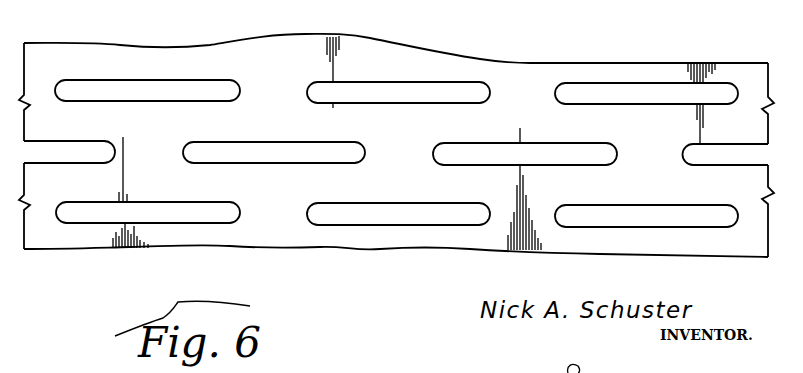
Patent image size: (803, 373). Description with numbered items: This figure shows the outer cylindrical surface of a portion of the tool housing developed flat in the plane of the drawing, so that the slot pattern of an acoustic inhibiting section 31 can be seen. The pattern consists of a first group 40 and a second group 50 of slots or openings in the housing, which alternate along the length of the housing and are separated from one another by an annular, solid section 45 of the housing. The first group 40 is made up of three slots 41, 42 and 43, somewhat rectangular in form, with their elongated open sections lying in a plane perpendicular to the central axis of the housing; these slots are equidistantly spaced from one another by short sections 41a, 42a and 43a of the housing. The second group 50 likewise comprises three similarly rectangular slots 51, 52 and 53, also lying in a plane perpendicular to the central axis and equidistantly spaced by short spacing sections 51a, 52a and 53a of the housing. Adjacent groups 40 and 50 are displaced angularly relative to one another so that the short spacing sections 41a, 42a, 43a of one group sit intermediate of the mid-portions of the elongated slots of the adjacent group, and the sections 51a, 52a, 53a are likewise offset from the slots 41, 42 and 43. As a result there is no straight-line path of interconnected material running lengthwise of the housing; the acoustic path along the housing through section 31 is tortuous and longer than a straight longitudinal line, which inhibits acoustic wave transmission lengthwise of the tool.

The first group of slots 40 is at (394, 80).
The slot 41 is at (138, 80).
The slot 42 is at (343, 92).
The slot 43 is at (636, 86).
The short section of the housing 41a is at (268, 88).
The short section of the housing 42a is at (506, 90).
The short section of the housing 43a is at (52, 41).
The acoustic inhibiting section 31 is at (538, 90).
The annular solid section of the housing 45 is at (328, 181).
The second group of slots 50 is at (504, 143).
The slot 51 is at (72, 147).
The slot 52 is at (297, 146).
The slot 53 is at (571, 146).
The short spacing section of the housing 51a is at (145, 151).
The short spacing section of the housing 52a is at (396, 154).
The short spacing section of the housing 53a is at (643, 154).